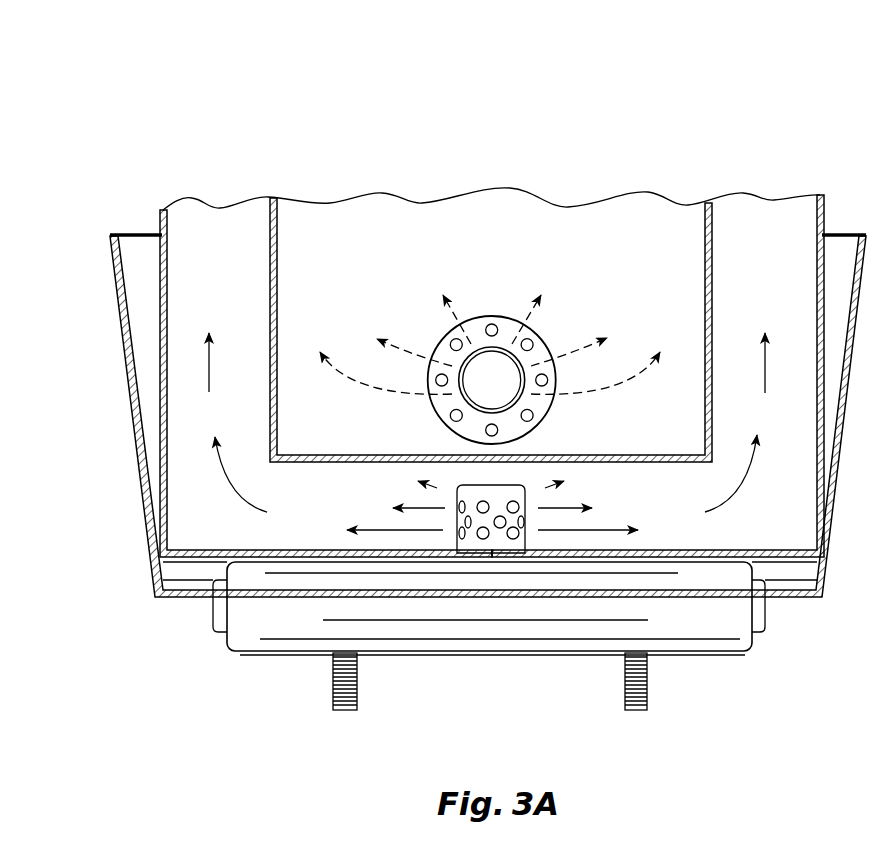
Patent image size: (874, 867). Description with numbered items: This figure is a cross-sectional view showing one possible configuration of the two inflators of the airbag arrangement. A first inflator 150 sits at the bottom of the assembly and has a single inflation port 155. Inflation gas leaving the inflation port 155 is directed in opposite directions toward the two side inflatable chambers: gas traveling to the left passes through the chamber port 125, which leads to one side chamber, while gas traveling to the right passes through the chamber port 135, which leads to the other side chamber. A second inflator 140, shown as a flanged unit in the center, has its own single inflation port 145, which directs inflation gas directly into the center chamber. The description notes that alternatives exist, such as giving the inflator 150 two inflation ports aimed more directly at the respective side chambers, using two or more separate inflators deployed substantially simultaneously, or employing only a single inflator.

The chamber port 125 is at (237, 274).
The chamber port 135 is at (779, 272).
The inflator 140 is at (547, 325).
The inflation port 145 is at (495, 363).
The inflator 150 is at (716, 667).
The inflation port 155 is at (473, 535).